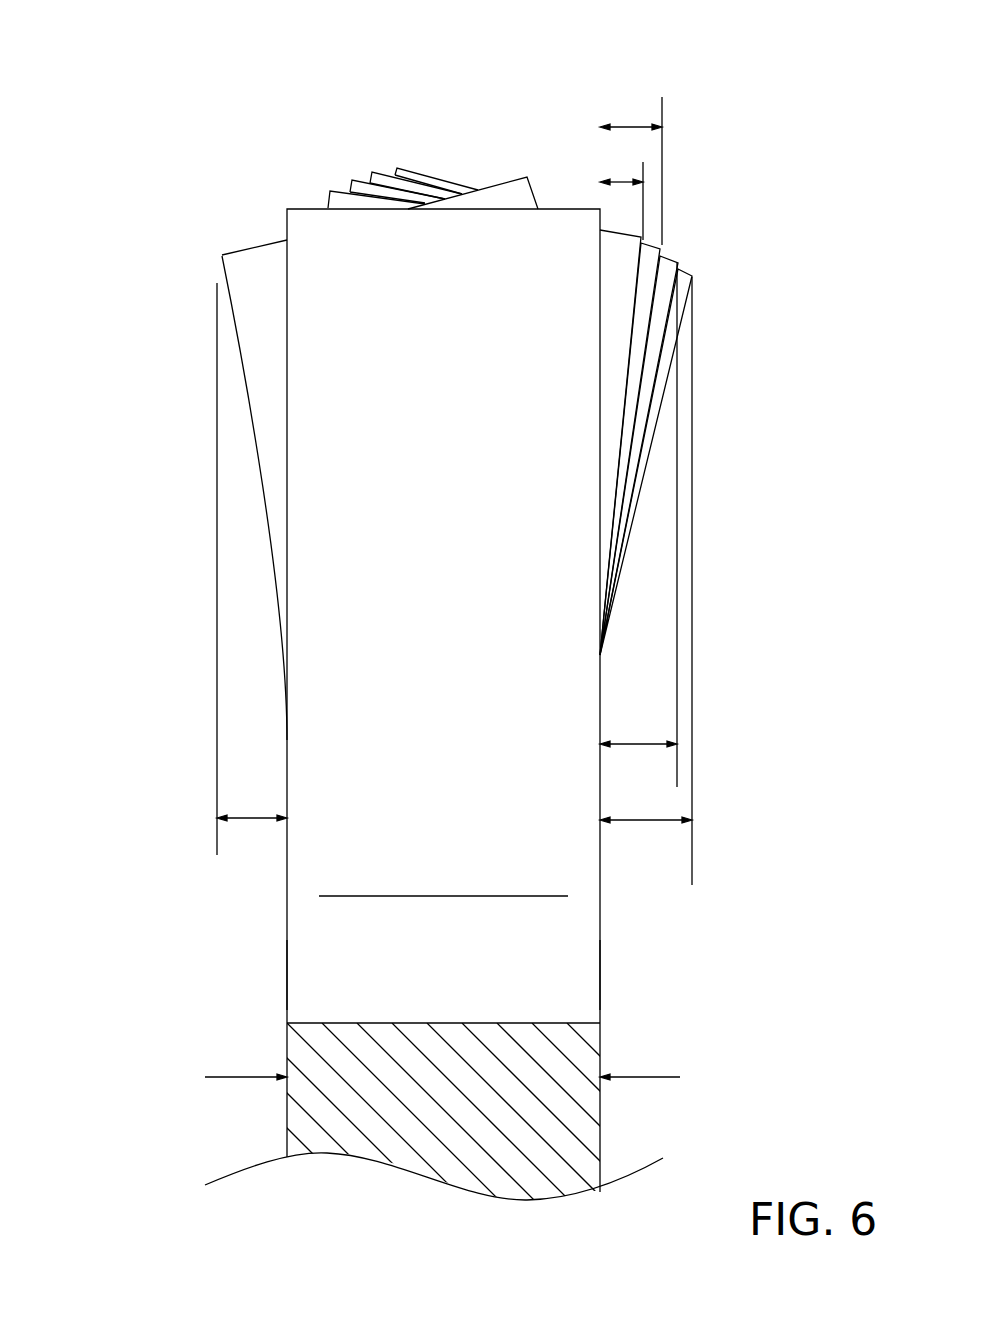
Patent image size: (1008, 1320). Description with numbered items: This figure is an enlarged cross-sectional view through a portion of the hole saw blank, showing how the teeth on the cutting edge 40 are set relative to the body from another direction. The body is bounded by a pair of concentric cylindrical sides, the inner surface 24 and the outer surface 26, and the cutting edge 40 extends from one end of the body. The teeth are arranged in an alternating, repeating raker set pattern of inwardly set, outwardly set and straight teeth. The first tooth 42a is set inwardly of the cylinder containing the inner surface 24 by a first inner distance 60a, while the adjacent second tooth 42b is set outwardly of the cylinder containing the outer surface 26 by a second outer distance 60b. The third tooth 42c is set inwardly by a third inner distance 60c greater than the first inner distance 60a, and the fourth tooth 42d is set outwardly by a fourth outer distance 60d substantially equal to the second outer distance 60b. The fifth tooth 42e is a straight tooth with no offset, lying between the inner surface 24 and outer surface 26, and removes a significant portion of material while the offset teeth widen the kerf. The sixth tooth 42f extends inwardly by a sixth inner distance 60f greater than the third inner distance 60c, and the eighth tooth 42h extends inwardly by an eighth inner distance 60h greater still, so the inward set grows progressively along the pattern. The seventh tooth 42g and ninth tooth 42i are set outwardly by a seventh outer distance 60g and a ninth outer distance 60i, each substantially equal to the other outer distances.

The inner surface 24 is at (600, 978).
The outer surface 26 is at (287, 975).
The cutting edge 40 is at (459, 176).
The first tooth 42a is at (615, 271).
The second tooth 42b is at (171, 446).
The third tooth 42c is at (642, 305).
The fourth tooth 42d is at (171, 446).
The fifth tooth 42e is at (487, 730).
The sixth tooth 42f is at (666, 255).
The seventh tooth 42g is at (171, 446).
The eighth tooth 42h is at (685, 280).
The ninth tooth 42i is at (258, 260).
The first inner distance 60a is at (623, 181).
The second outer distance 60b is at (169, 592).
The third inner distance 60c is at (637, 125).
The fourth outer distance 60d is at (169, 592).
The sixth inner distance 60f is at (641, 747).
The seventh outer distance 60g is at (169, 592).
The eighth inner distance 60h is at (638, 823).
The ninth outer distance 60i is at (250, 818).